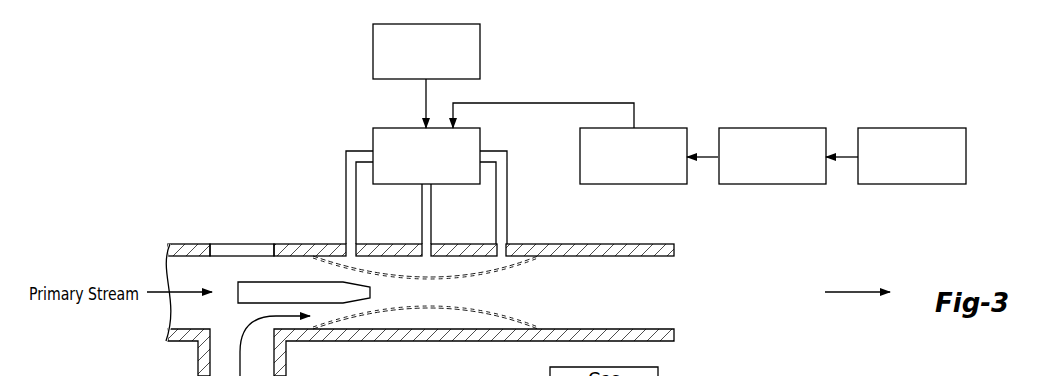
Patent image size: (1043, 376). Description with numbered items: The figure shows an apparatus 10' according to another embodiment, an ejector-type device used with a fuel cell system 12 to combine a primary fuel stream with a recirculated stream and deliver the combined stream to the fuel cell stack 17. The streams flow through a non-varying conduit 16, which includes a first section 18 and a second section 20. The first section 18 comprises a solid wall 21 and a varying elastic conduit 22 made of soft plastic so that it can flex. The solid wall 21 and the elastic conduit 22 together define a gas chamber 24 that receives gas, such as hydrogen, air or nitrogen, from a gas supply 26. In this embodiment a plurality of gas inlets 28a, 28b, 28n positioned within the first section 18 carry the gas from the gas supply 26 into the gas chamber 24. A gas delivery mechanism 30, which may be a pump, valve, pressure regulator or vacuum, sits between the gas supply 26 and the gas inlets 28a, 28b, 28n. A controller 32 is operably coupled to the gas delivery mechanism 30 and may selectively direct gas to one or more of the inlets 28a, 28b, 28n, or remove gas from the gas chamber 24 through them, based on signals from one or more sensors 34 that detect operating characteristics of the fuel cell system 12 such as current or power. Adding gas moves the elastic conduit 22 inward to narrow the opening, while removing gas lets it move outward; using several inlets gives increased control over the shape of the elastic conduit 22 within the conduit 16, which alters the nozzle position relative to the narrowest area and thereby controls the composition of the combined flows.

The apparatus 10' is at (279, 105).
The fuel cell system 12 is at (912, 128).
The conduit 16 is at (427, 280).
The fuel cell stack 17 is at (890, 274).
The first section 18 is at (518, 233).
The second section 20 is at (235, 233).
The solid wall 21 is at (659, 256).
The elastic conduit 22 is at (513, 268).
The gas chamber 24 is at (420, 267).
The gas supply 26 is at (480, 52).
The gas inlet 28a is at (346, 238).
The gas inlet 28b is at (422, 238).
The gas inlet 28n is at (497, 238).
The gas delivery mechanism 30 is at (388, 128).
The controller 32 is at (676, 128).
The sensor 34 is at (774, 128).